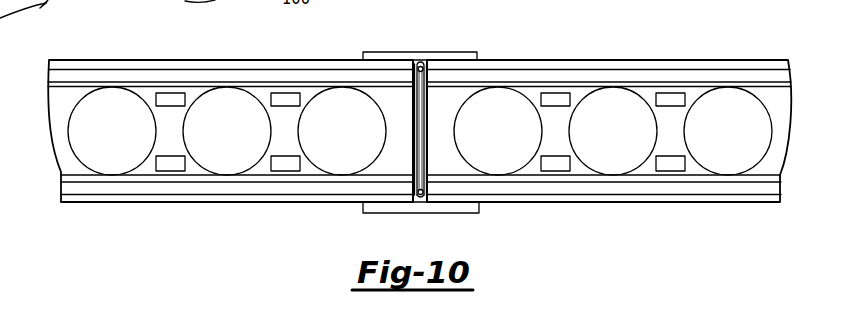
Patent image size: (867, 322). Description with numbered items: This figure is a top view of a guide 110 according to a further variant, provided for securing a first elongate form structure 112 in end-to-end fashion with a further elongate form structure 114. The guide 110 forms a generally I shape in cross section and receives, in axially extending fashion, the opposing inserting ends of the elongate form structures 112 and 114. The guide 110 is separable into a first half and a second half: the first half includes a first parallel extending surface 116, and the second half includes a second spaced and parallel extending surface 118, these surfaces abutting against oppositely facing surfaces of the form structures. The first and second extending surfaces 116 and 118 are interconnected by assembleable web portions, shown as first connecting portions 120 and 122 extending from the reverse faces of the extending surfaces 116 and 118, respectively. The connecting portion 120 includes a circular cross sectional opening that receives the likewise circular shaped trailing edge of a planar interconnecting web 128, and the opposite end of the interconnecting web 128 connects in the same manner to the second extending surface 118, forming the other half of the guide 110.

The guide 110 is at (432, 45).
The first elongate form structure 112 is at (123, 187).
The further elongate form structure 114 is at (593, 189).
The first parallel extending surface 116 is at (462, 52).
The second spaced and parallel extending surface 118 is at (477, 213).
The first connecting portion 120 is at (413, 60).
The connecting portion 122 is at (421, 198).
The planar interconnecting web 128 is at (413, 157).